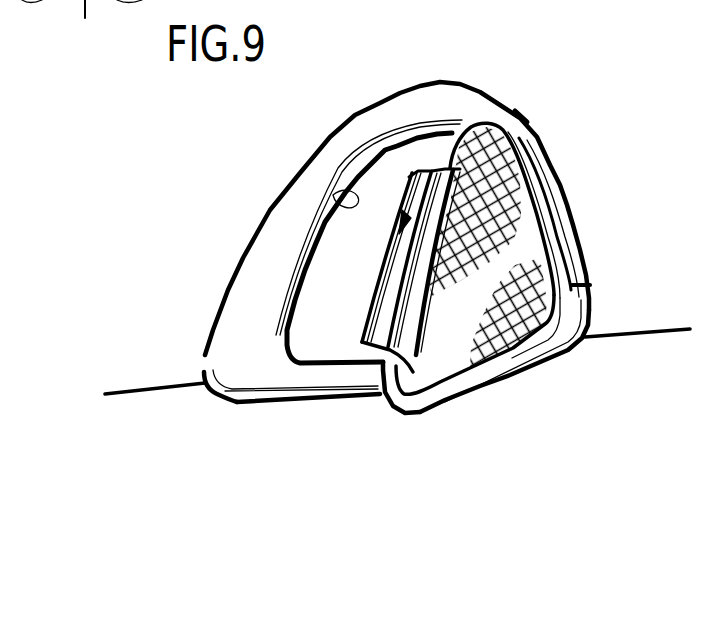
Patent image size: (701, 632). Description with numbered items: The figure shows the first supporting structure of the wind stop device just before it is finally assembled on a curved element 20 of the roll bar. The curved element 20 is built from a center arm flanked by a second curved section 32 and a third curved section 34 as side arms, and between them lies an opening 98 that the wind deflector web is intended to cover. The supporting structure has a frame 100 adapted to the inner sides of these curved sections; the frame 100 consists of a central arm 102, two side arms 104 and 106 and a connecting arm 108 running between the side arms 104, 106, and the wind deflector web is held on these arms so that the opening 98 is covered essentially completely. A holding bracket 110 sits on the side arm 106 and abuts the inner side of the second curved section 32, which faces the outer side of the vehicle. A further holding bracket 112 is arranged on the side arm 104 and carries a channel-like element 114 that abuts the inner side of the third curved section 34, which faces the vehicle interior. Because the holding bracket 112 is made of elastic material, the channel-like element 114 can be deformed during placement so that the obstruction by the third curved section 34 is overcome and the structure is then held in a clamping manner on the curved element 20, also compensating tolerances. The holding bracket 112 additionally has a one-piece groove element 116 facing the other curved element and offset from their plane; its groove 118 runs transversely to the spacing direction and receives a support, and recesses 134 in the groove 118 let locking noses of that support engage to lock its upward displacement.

The curved element 20 is at (515, 92).
The second curved section 32 is at (540, 150).
The third curved section 34 is at (233, 300).
The opening 98 is at (333, 195).
The frame 100 is at (522, 115).
The central arm 102 is at (490, 130).
The side arm 104 is at (385, 365).
The side arm 106 is at (572, 300).
The connecting arm 108 is at (458, 385).
The holding bracket 110 is at (562, 240).
The holding bracket 112 is at (403, 400).
The channel-like element 114 is at (448, 300).
The groove element 116 is at (363, 293).
The groove 118 is at (257, 238).
The recess 134 is at (402, 212).